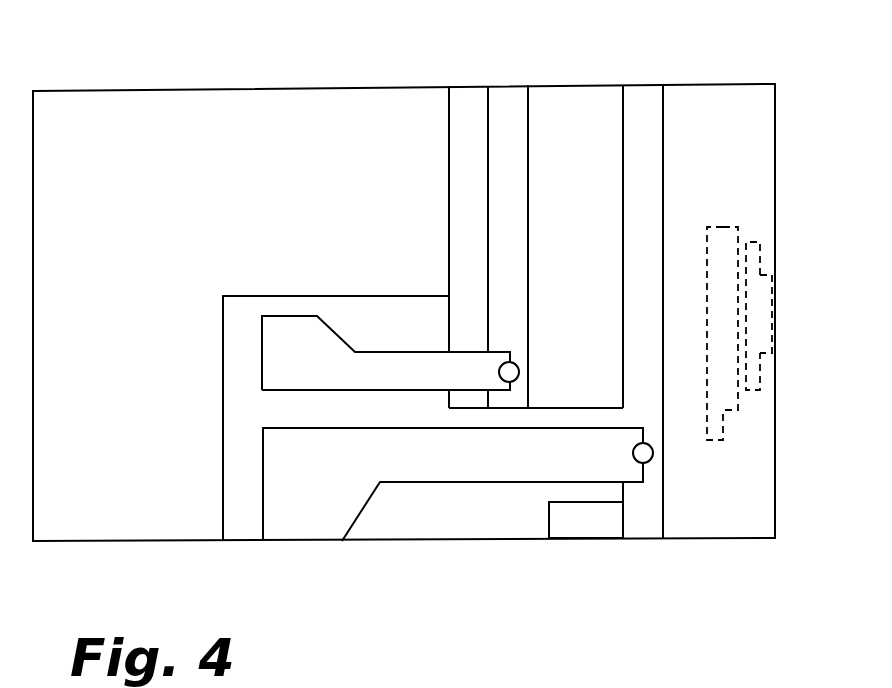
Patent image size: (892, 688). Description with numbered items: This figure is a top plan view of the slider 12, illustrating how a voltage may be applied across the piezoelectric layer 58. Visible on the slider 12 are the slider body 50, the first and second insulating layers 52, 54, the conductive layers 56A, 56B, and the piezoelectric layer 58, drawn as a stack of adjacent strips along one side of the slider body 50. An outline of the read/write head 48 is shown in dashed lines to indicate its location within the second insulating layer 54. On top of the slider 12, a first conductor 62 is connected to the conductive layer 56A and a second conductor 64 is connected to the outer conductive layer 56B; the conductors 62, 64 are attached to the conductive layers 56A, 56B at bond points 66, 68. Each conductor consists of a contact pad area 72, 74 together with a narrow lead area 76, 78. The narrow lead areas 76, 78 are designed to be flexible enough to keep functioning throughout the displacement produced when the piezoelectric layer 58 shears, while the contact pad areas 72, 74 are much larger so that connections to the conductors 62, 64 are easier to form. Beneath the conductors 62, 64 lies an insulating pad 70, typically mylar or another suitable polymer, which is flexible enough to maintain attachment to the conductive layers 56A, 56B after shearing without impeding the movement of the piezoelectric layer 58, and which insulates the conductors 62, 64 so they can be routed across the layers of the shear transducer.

The slider 12 is at (283, 66).
The read/write head 48 is at (776, 290).
The slider body 50 is at (158, 208).
The first insulating layer 52 is at (460, 85).
The second insulating layer 54 is at (708, 82).
The conductive layer 56A is at (505, 85).
The outer conductive layer 56B is at (642, 82).
The piezoelectric layer 58 is at (562, 85).
The first conductor 62 is at (205, 347).
The second conductor 64 is at (192, 475).
The bond point 66 is at (512, 360).
The bond point 68 is at (645, 463).
The insulating pad 70 is at (435, 515).
The contact pad area 72 is at (292, 335).
The contact pad area 74 is at (307, 508).
The narrow lead area 76 is at (382, 368).
The narrow lead area 78 is at (503, 470).